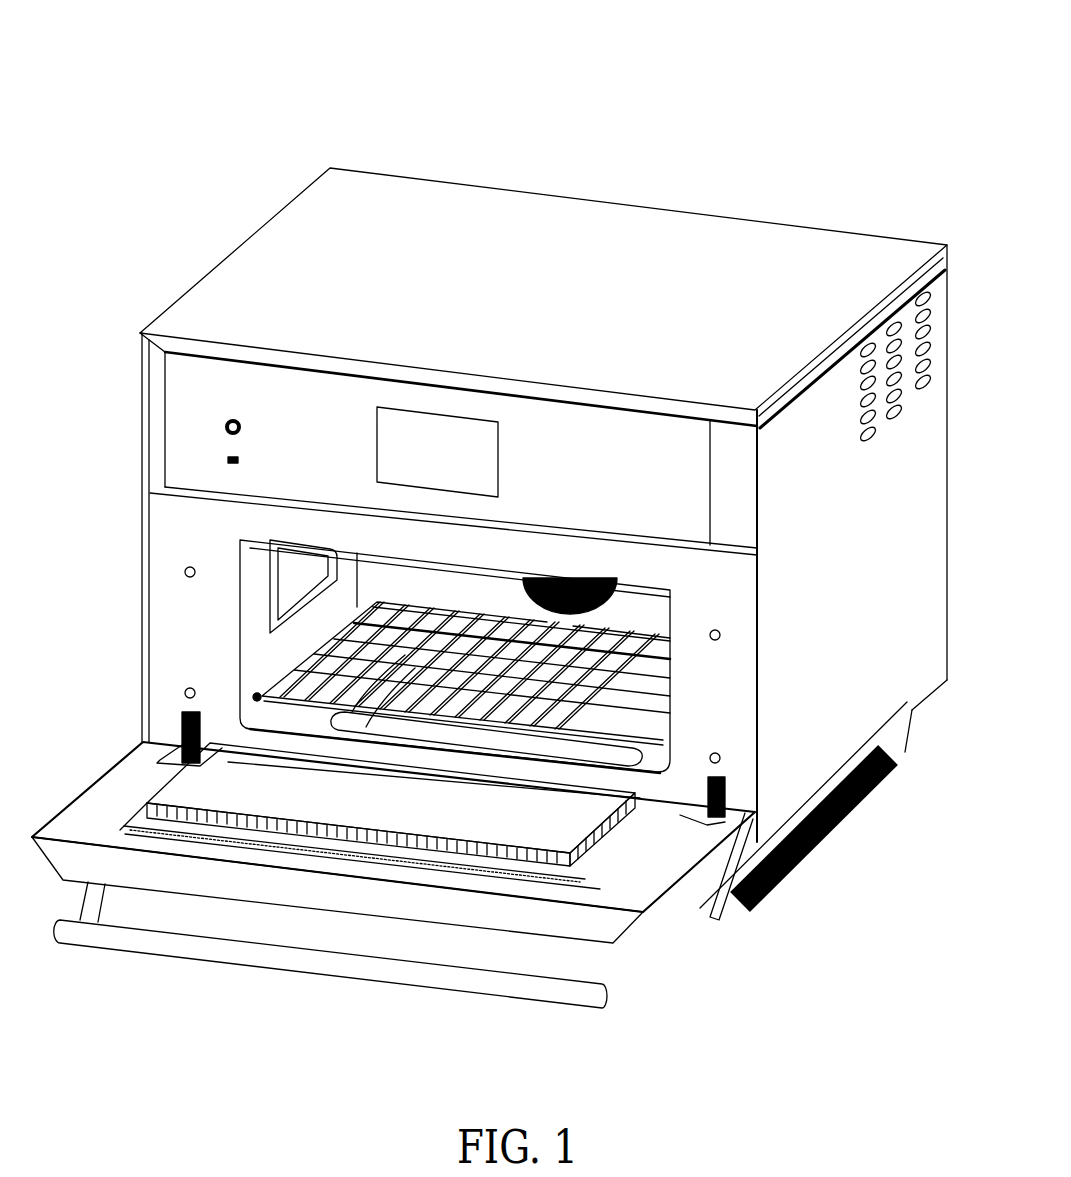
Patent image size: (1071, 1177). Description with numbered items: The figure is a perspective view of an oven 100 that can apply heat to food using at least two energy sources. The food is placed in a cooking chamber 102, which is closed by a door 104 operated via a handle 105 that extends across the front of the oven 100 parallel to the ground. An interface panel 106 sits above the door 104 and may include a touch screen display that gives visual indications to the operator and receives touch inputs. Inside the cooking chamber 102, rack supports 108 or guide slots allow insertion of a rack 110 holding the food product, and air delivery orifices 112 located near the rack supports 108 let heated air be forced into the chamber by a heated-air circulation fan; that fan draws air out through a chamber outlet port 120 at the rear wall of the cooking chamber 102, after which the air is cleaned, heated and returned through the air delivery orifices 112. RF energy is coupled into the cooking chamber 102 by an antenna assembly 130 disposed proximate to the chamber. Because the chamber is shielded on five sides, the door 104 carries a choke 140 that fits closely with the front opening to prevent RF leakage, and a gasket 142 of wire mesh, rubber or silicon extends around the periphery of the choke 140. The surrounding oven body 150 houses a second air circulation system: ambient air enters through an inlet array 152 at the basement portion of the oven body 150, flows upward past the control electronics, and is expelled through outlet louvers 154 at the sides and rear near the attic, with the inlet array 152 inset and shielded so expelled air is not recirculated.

The oven 100 is at (524, 422).
The cooking chamber 102 is at (360, 656).
The door 104 is at (393, 873).
The handle 105 is at (330, 974).
The interface panel 106 is at (485, 428).
The rack supports 108 is at (253, 697).
The rack 110 is at (538, 710).
The air delivery orifices 112 is at (536, 648).
The chamber outlet port 120 is at (601, 558).
The antenna assembly 130 is at (193, 558).
The choke 140 is at (420, 864).
The gasket 142 is at (715, 874).
The oven body 150 is at (398, 453).
The inlet array 152 is at (823, 805).
The outlet louvers 154 is at (889, 308).